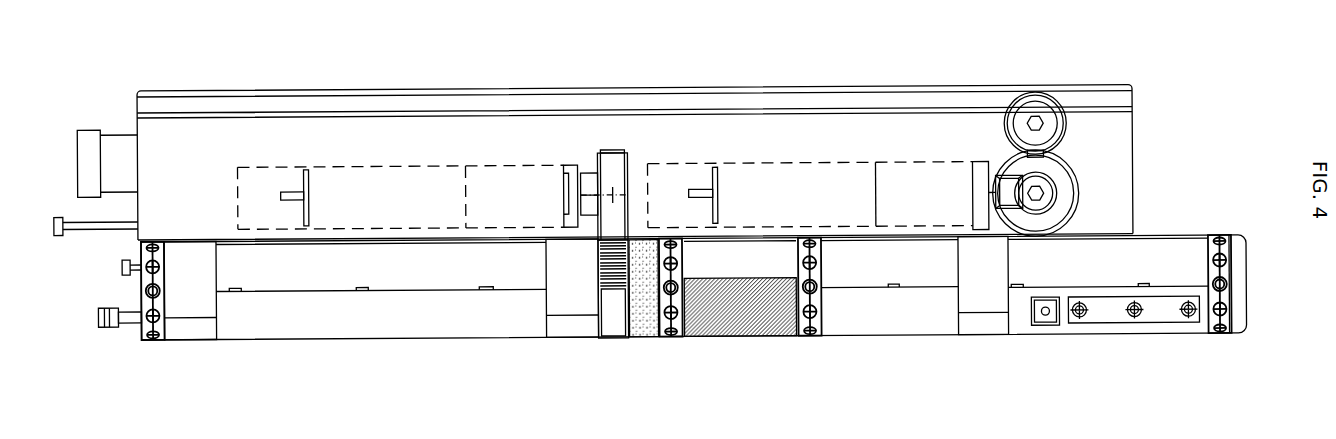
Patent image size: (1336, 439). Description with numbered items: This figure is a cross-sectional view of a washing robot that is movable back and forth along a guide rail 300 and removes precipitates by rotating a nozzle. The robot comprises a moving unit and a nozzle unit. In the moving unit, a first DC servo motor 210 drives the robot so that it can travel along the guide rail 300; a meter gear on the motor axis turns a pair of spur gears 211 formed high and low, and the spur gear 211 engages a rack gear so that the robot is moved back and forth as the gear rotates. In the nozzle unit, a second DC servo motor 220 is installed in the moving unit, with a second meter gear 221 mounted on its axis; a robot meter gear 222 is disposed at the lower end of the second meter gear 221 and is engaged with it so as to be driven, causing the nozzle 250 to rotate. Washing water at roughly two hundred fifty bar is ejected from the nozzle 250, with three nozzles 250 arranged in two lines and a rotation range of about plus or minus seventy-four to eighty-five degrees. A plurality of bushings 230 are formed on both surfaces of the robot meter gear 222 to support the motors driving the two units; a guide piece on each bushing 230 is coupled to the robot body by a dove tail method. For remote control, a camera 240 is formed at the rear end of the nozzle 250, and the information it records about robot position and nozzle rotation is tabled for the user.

The guide rail 300 is at (190, 100).
The second DC servo motor 220 is at (413, 195).
The second meter gear 221 is at (612, 168).
The robot meter gear 222 is at (616, 325).
The first DC servo motor 210 is at (915, 180).
The spur gear 211 is at (1039, 116).
The bushing 230 is at (185, 328).
The camera 240 is at (1048, 332).
The nozzle 250 is at (1131, 329).